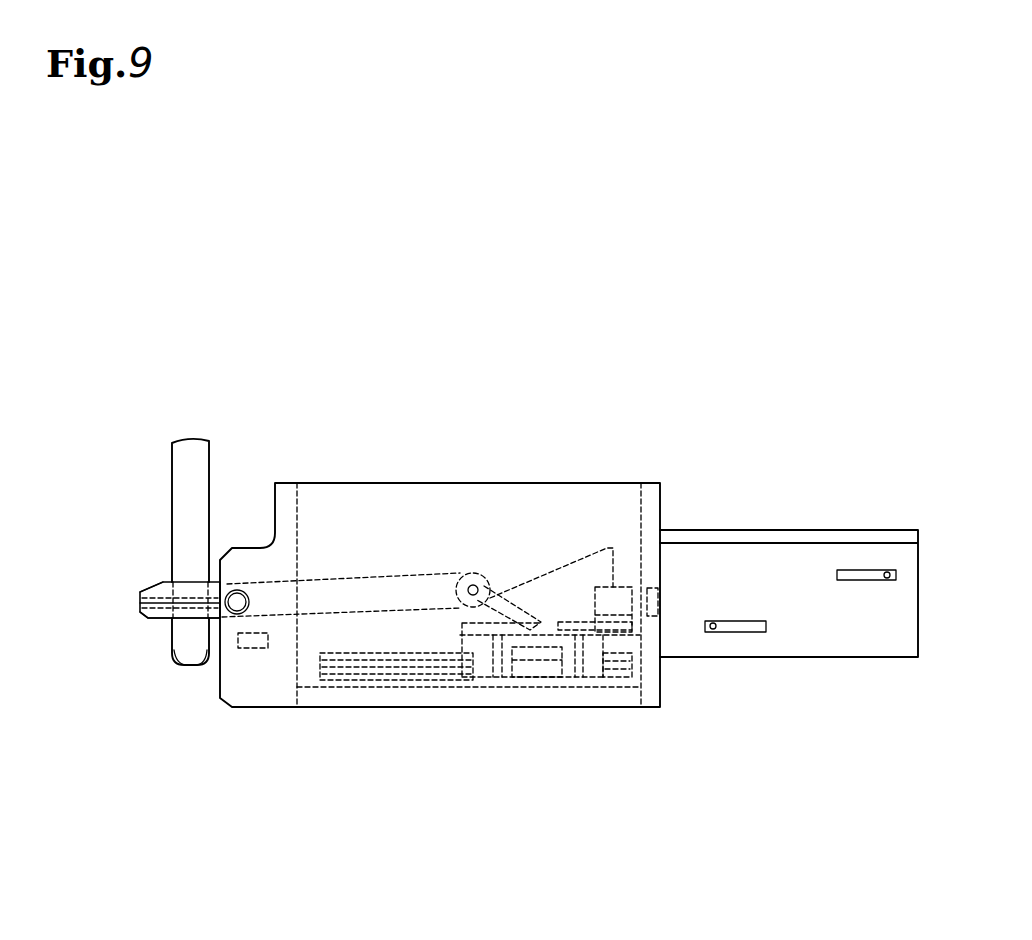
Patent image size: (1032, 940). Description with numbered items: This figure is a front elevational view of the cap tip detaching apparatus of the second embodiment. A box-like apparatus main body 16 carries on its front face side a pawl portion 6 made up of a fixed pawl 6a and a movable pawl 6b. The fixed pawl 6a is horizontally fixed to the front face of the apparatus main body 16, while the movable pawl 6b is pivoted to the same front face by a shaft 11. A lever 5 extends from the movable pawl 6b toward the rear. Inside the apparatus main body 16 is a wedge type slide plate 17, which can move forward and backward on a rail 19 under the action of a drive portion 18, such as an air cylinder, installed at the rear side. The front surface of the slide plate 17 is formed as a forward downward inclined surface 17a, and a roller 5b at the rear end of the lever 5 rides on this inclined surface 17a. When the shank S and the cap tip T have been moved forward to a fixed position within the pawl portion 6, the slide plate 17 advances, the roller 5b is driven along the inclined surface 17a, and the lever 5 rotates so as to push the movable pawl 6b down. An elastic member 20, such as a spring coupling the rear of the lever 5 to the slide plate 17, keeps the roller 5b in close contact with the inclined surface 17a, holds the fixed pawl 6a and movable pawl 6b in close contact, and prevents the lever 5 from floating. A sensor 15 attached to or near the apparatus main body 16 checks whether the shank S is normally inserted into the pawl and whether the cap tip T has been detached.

The shank S is at (172, 495).
The cap tip T is at (172, 655).
The pawl portion 6 is at (123, 596).
The fixed pawl 6a is at (140, 592).
The movable pawl 6b is at (140, 612).
The shaft 11 is at (237, 592).
The lever 5 is at (368, 573).
The roller 5b is at (470, 572).
The elastic member 20 is at (517, 598).
The wedge type slide plate 17 is at (557, 587).
The inclined surface 17a is at (596, 550).
The drive portion 18 is at (812, 530).
The rail 19 is at (397, 687).
The sensor 15 is at (250, 648).
The apparatus main body 16 is at (589, 712).